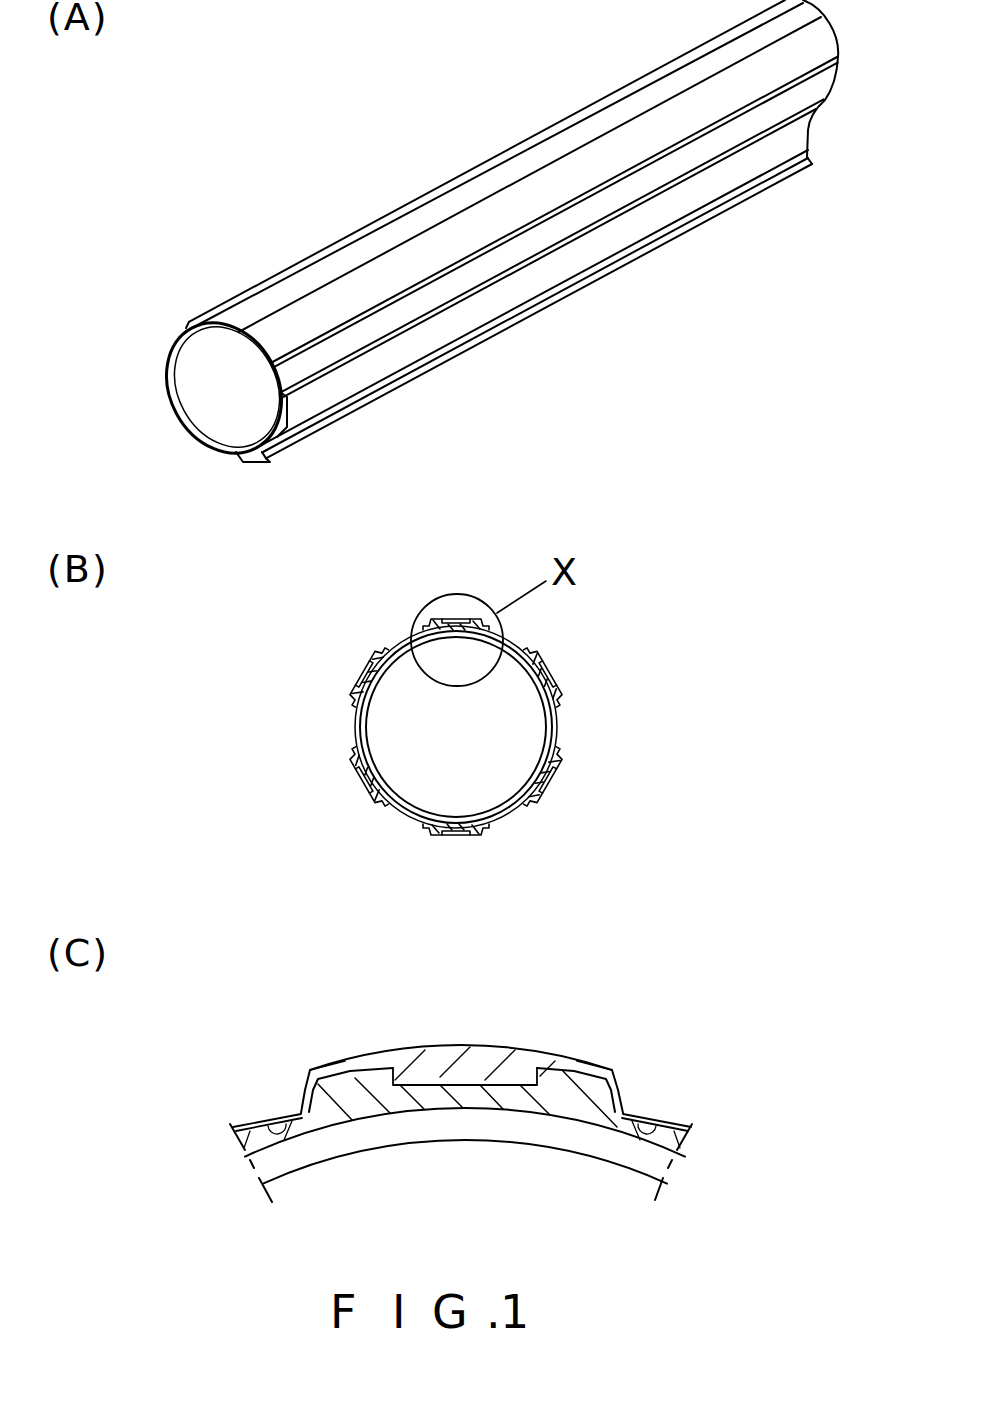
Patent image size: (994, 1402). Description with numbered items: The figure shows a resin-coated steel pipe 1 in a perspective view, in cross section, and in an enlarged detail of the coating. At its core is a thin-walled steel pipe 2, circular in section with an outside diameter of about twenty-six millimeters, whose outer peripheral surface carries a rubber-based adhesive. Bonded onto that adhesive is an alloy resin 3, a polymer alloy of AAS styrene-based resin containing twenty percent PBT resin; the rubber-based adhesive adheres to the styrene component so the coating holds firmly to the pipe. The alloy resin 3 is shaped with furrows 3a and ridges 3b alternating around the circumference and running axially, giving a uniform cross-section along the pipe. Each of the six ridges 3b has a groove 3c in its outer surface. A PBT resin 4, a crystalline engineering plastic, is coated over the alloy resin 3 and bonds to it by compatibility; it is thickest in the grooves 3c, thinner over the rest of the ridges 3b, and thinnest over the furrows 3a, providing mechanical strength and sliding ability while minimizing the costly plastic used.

The resin-coated steel pipe 1 is at (276, 203).
The thin-walled steel pipe 2 is at (178, 345).
The alloy resin 3 is at (443, 218).
The furrows 3a is at (352, 736).
The ridges 3b is at (378, 650).
The groove 3c is at (363, 703).
The PBT resin (crystalline engineering plastic) 4 is at (572, 177).